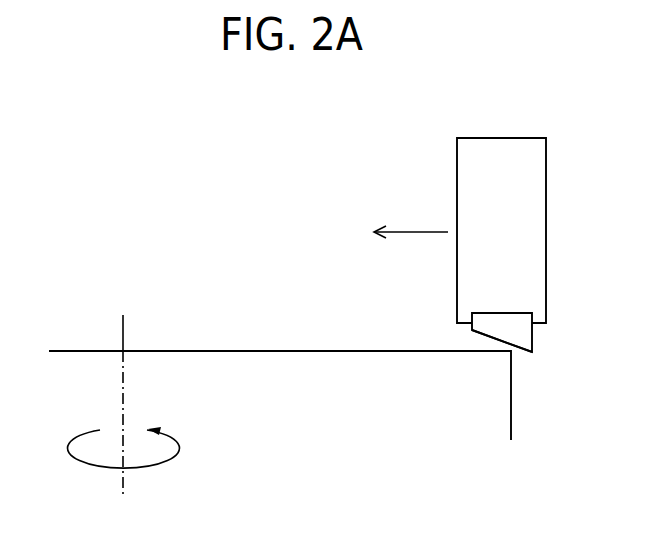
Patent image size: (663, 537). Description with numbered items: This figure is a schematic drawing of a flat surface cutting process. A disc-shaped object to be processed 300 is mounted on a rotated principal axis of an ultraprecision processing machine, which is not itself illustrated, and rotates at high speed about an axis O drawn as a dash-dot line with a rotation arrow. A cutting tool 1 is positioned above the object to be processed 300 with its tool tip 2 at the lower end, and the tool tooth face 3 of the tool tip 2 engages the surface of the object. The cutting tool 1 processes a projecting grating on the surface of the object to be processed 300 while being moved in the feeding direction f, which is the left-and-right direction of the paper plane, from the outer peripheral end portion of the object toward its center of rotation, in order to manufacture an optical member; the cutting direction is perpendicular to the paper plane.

The cutting tool 1 is at (466, 171).
The tool tip 2 is at (508, 312).
The tool tooth face 3 is at (525, 333).
The object to be processed 300 is at (220, 368).
The rotation axis O is at (120, 331).
The feeding direction f is at (403, 230).